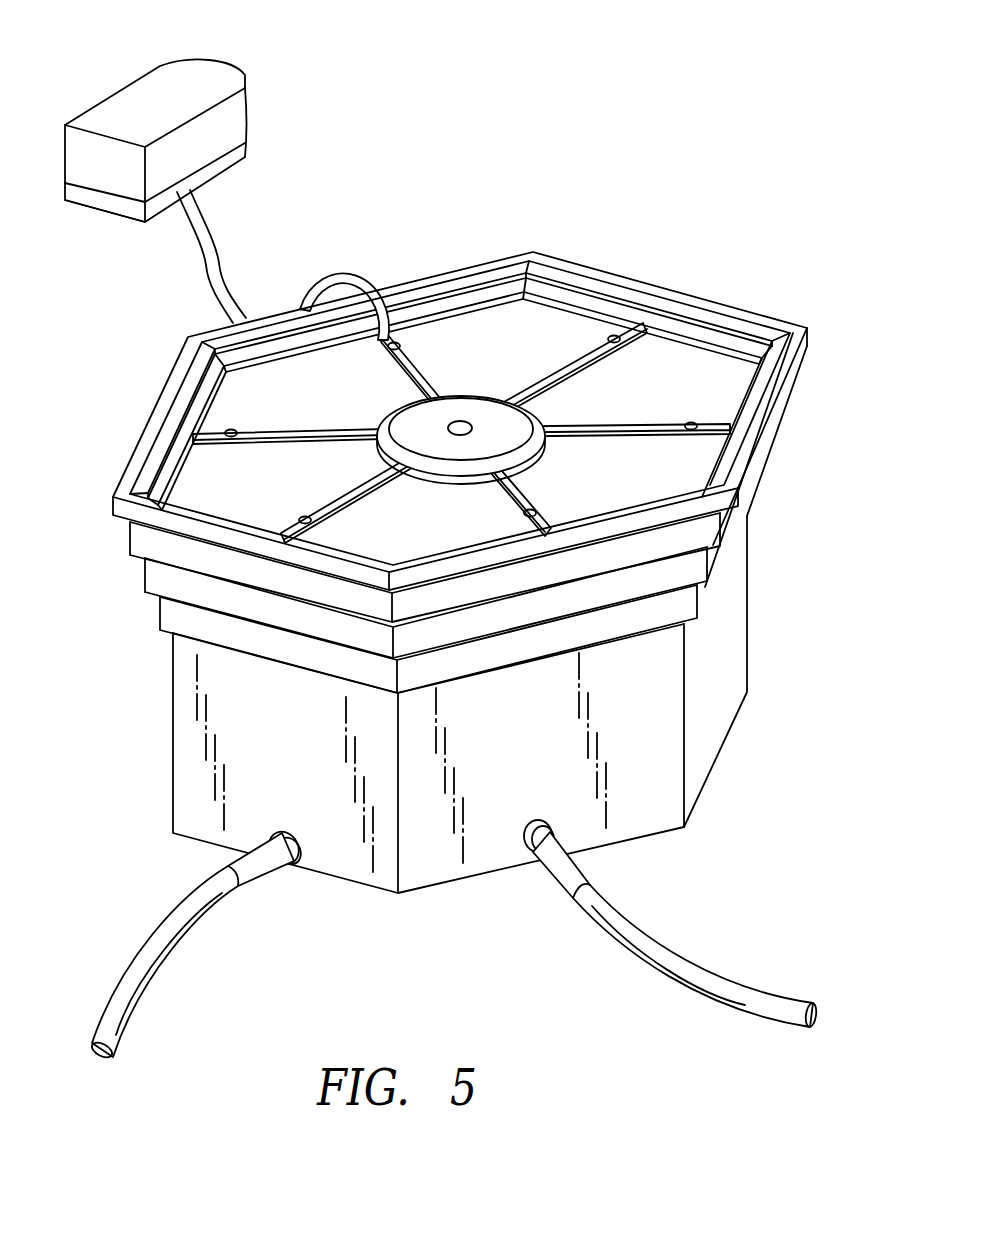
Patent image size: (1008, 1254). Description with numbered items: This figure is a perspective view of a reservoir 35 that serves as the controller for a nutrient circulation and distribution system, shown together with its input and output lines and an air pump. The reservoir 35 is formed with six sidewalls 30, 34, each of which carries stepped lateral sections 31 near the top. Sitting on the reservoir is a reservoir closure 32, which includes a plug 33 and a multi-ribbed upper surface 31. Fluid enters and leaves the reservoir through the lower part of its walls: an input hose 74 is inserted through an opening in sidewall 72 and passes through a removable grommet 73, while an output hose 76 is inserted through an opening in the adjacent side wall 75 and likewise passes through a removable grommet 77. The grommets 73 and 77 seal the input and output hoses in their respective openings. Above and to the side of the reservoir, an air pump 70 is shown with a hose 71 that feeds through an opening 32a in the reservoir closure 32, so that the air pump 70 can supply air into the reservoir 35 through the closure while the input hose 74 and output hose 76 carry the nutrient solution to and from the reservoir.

The sidewall 30 is at (722, 670).
The stepped lateral sections 31 is at (625, 620).
The reservoir closure 32 is at (507, 323).
The opening 32a is at (427, 332).
The plug 33 is at (483, 410).
The sidewall 34 is at (650, 795).
The reservoir 35 is at (766, 538).
The air pump 70 is at (130, 107).
The hose 71 is at (353, 283).
The sidewall 72 is at (354, 855).
The removable grommet 73 is at (293, 834).
The input hose 74 is at (150, 940).
The side wall 75 is at (544, 789).
The output hose 76 is at (760, 1000).
The removable grommet 77 is at (528, 843).